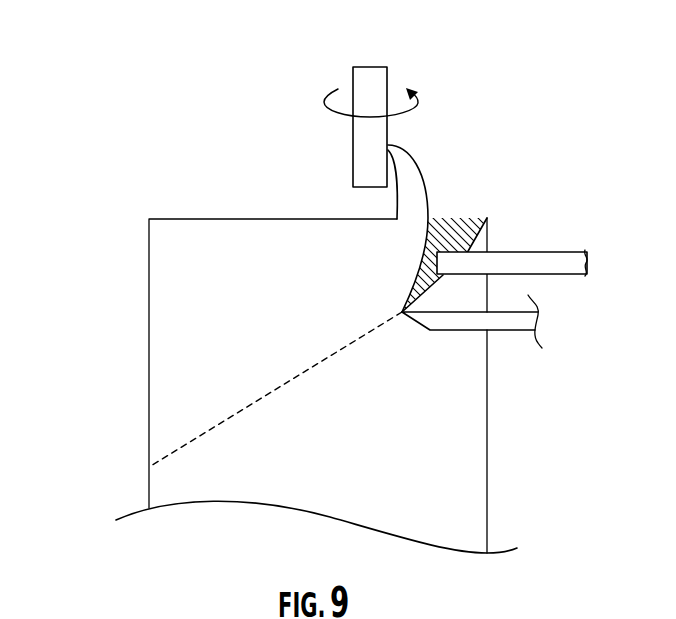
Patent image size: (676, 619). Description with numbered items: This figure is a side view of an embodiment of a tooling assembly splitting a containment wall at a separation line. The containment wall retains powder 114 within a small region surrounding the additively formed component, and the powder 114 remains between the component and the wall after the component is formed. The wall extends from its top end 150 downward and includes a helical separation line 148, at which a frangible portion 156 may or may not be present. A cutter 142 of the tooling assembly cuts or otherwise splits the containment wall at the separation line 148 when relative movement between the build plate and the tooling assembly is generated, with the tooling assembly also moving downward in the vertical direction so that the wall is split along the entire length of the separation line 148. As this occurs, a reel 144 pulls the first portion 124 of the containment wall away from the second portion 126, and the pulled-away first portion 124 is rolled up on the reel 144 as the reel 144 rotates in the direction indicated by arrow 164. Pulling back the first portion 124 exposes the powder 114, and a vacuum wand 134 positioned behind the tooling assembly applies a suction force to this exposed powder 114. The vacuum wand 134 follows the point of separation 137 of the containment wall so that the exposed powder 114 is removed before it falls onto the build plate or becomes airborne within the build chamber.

The top end 150 is at (137, 127).
The reel 144 is at (358, 67).
The arrow 164 is at (427, 104).
The powder 114 is at (451, 209).
The vacuum wand 134 is at (547, 252).
The cutter 142 is at (501, 332).
The point of separation 137 is at (398, 318).
The helical separation line 148 is at (301, 389).
The frangible portion 156 is at (302, 374).
The first portion 124 is at (195, 330).
The second portion 126 is at (457, 481).